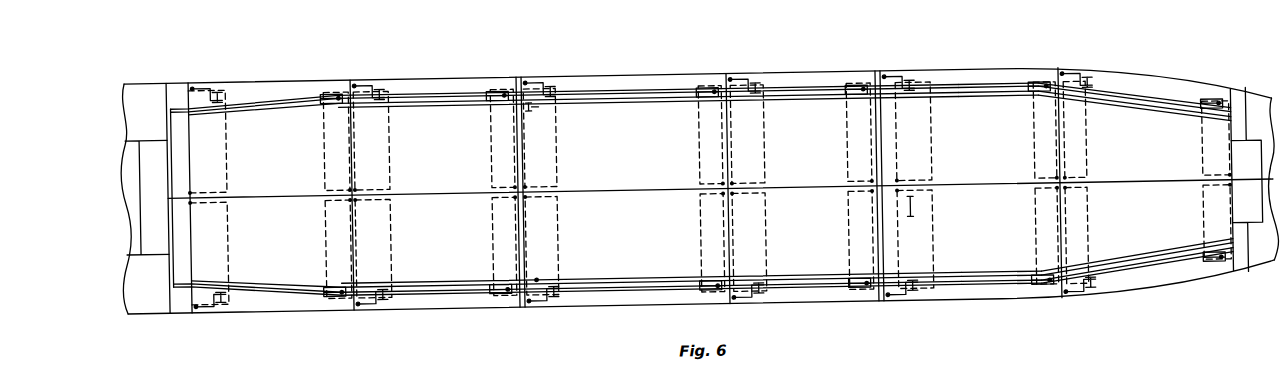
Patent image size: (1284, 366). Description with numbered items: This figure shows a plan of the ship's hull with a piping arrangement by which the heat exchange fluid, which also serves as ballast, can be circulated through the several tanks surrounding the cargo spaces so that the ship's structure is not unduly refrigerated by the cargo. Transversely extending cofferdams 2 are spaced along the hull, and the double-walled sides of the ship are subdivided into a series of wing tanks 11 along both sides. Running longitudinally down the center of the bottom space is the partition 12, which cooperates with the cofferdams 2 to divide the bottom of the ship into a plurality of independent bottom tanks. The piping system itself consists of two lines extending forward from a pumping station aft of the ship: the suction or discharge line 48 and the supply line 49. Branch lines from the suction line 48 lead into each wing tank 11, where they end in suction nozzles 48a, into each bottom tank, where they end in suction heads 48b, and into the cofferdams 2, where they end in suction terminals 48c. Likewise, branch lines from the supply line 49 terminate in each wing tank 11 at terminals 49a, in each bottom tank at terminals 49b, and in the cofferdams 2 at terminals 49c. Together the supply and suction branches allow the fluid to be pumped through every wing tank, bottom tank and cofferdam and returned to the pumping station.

The cofferdam 2 is at (180, 302).
The wing tank 11 is at (258, 80).
The partition 12 is at (270, 192).
The suction or discharge line 48 is at (986, 304).
The supply line 49 is at (1138, 104).
The suction nozzle 48a is at (194, 80).
The suction head 48b is at (191, 183).
The suction terminal 48c is at (899, 196).
The supply terminal to wing tank 49a is at (340, 88).
The supply terminal to bottom tank 49b is at (350, 183).
The supply terminal to cofferdam 49c is at (541, 104).